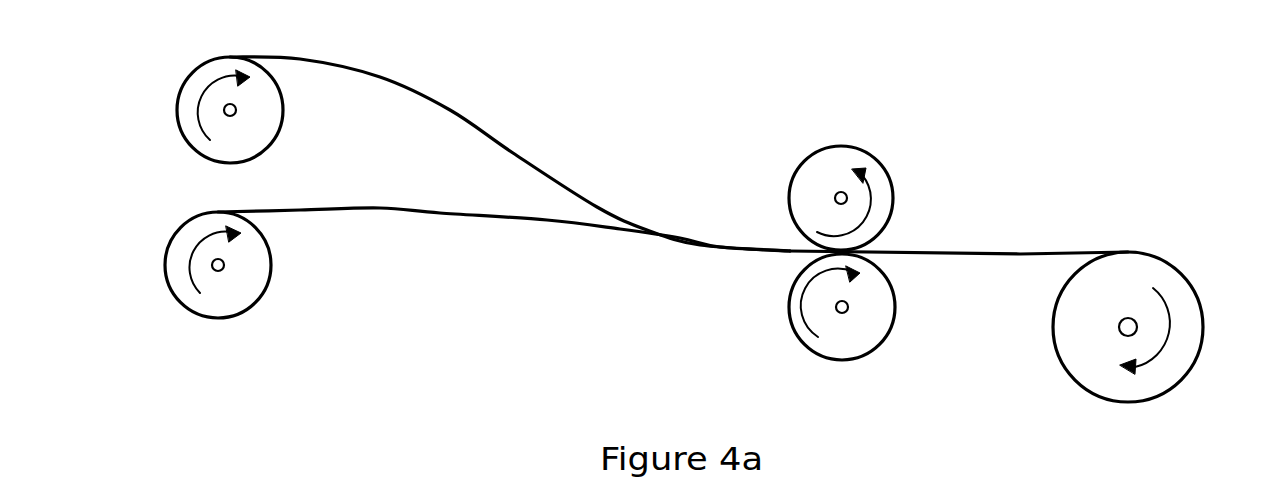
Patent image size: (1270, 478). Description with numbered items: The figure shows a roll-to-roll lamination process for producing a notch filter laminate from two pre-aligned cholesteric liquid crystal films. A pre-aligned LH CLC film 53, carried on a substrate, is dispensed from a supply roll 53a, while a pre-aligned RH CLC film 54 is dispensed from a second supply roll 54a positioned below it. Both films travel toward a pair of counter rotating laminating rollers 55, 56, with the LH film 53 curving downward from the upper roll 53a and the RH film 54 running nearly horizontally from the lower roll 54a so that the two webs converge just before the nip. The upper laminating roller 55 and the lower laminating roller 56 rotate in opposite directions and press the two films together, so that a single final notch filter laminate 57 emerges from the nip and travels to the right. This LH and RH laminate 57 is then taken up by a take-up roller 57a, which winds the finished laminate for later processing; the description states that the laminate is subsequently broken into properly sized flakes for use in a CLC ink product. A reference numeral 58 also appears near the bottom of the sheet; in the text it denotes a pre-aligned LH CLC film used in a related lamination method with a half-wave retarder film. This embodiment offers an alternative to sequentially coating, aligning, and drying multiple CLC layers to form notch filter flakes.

The pre-aligned LH CLC film 53 is at (413, 83).
The roll 53a is at (268, 108).
The pre-aligned RH CLC film 54 is at (353, 205).
The roll 54a is at (276, 267).
The laminating roller 55 is at (893, 192).
The laminating roller 56 is at (895, 303).
The notch filter laminate 57 is at (1065, 238).
The take-up roller 57a is at (1195, 280).
The pre-aligned LH CLC film 58 is at (463, 477).